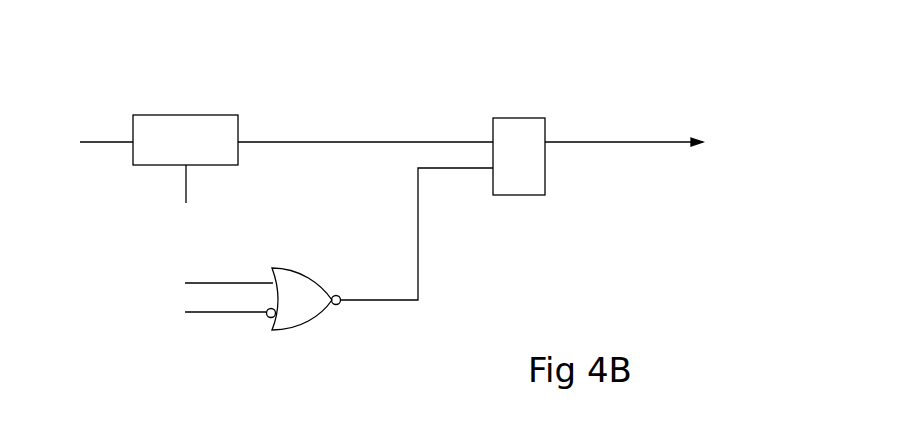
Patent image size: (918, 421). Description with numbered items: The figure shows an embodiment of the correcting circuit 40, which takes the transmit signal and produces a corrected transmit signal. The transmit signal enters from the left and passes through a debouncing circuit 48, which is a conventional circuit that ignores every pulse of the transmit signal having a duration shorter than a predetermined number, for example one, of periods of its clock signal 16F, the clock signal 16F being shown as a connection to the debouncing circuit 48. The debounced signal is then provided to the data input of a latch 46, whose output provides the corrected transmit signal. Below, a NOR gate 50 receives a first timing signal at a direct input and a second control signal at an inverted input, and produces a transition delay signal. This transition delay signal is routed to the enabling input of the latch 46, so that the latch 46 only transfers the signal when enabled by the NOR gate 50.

The correcting circuit 40 is at (597, 68).
The debouncing circuit 48 is at (198, 123).
The clock signal 16F is at (194, 203).
The latch 46 is at (513, 125).
The NOR gate 50 is at (303, 283).